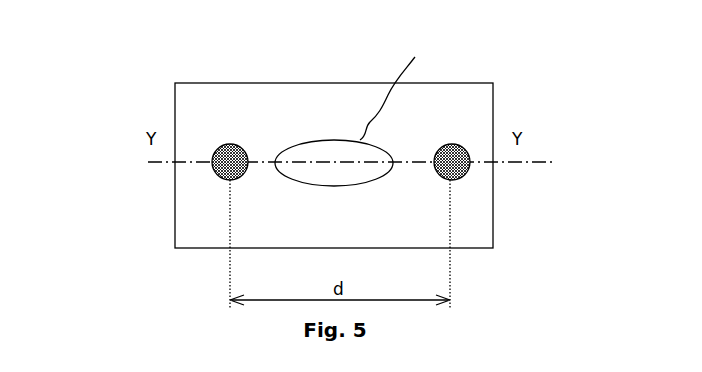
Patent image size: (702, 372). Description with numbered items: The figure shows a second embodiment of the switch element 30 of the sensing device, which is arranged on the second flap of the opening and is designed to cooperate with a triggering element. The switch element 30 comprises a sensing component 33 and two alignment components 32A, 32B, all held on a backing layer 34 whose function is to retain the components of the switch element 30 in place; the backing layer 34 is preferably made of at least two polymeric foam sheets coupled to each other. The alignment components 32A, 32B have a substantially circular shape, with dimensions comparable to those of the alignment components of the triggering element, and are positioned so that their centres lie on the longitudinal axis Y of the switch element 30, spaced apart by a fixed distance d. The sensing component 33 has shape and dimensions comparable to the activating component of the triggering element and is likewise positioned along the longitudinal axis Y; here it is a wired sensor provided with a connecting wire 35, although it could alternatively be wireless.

The switch element 30 is at (150, 80).
The alignment component 32A is at (220, 176).
The alignment component 32B is at (458, 178).
The sensing component 33 is at (310, 155).
The backing layer 34 is at (490, 118).
The connecting wire 35 is at (394, 73).